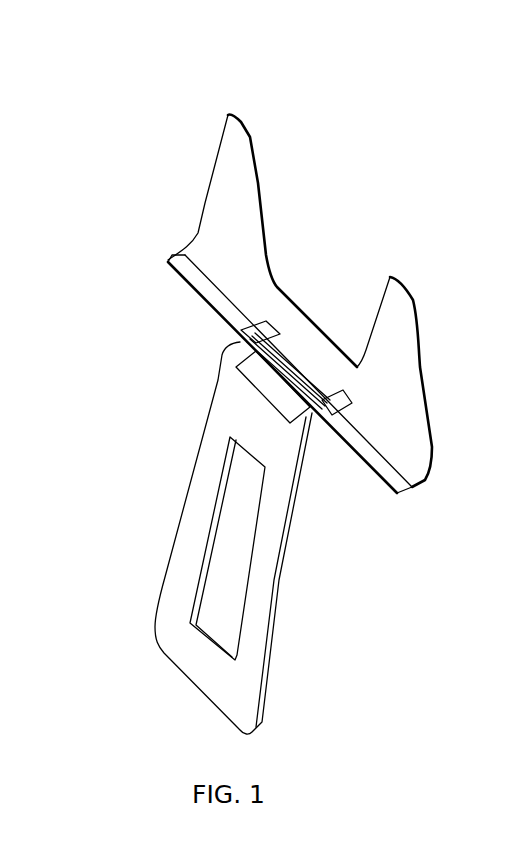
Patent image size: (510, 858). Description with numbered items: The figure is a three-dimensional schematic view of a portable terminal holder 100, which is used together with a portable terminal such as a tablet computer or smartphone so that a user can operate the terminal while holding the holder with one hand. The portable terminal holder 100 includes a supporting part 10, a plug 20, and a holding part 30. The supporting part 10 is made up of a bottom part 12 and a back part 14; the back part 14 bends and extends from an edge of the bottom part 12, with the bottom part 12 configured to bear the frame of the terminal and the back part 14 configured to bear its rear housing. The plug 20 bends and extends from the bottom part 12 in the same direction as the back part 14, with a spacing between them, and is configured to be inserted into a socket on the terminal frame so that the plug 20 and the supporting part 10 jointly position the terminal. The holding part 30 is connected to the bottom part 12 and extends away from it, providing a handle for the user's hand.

The portable terminal holder 100 is at (146, 95).
The supporting part 10 is at (99, 184).
The back part 14 is at (230, 228).
The bottom part 12 is at (164, 272).
The plug 20 is at (245, 345).
The holding part 30 is at (267, 520).